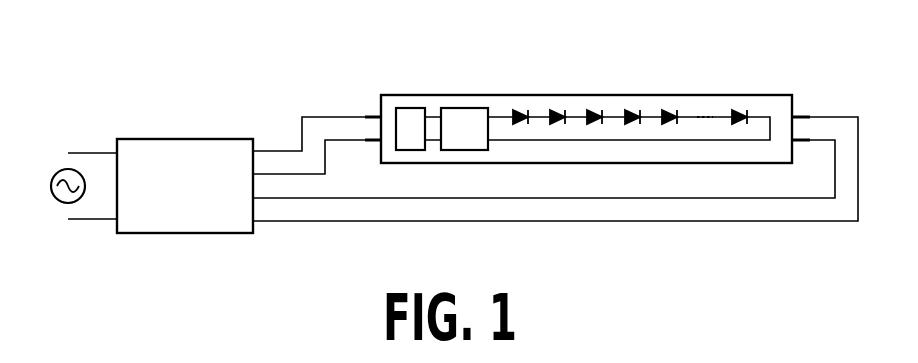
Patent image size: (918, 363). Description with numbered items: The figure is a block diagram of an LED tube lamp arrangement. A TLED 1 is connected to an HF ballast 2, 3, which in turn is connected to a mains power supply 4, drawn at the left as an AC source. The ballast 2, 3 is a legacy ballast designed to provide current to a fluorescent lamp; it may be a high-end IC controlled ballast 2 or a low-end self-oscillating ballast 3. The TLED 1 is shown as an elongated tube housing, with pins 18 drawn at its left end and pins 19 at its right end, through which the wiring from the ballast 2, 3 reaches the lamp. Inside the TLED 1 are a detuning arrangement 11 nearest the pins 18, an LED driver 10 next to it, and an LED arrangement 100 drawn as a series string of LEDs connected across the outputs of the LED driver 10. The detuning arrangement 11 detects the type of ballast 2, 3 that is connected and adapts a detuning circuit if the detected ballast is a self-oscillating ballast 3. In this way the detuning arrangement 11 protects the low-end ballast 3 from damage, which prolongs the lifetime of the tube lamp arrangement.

The TLED 1 is at (697, 95).
The high-end IC controlled ballast 2 is at (185, 150).
The low-end self-oscillating ballast 3 is at (192, 139).
The mains power supply 4 is at (57, 170).
The LED driver 10 is at (472, 108).
The detuning arrangement 11 is at (412, 108).
The first pins 18 is at (370, 116).
The second pins 19 is at (806, 115).
The LED arrangement 100 is at (598, 110).